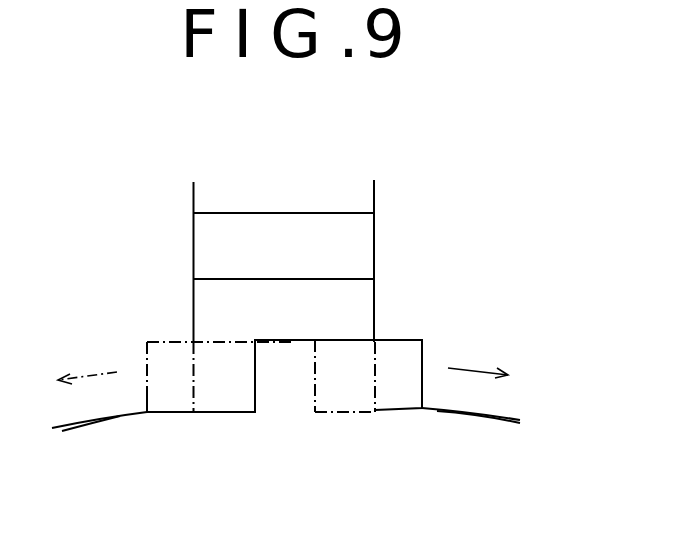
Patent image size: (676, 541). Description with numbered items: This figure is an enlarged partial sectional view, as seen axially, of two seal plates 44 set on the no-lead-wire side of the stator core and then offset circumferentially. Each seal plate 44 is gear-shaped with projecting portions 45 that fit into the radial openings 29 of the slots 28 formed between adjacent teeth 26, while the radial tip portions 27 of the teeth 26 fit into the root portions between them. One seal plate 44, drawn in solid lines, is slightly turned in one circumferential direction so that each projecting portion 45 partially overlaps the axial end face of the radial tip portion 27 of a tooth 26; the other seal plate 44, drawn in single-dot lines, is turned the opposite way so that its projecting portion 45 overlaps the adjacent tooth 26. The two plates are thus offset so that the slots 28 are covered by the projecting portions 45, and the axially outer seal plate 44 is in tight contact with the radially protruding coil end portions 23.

The coil end portion 23 is at (303, 260).
The tooth 26 is at (143, 228).
The radial tip portion 27 is at (113, 414).
The slot 28 is at (373, 190).
The radial opening 29 is at (195, 390).
The seal plate 44 is at (140, 353).
The projecting portion 45 is at (167, 342).